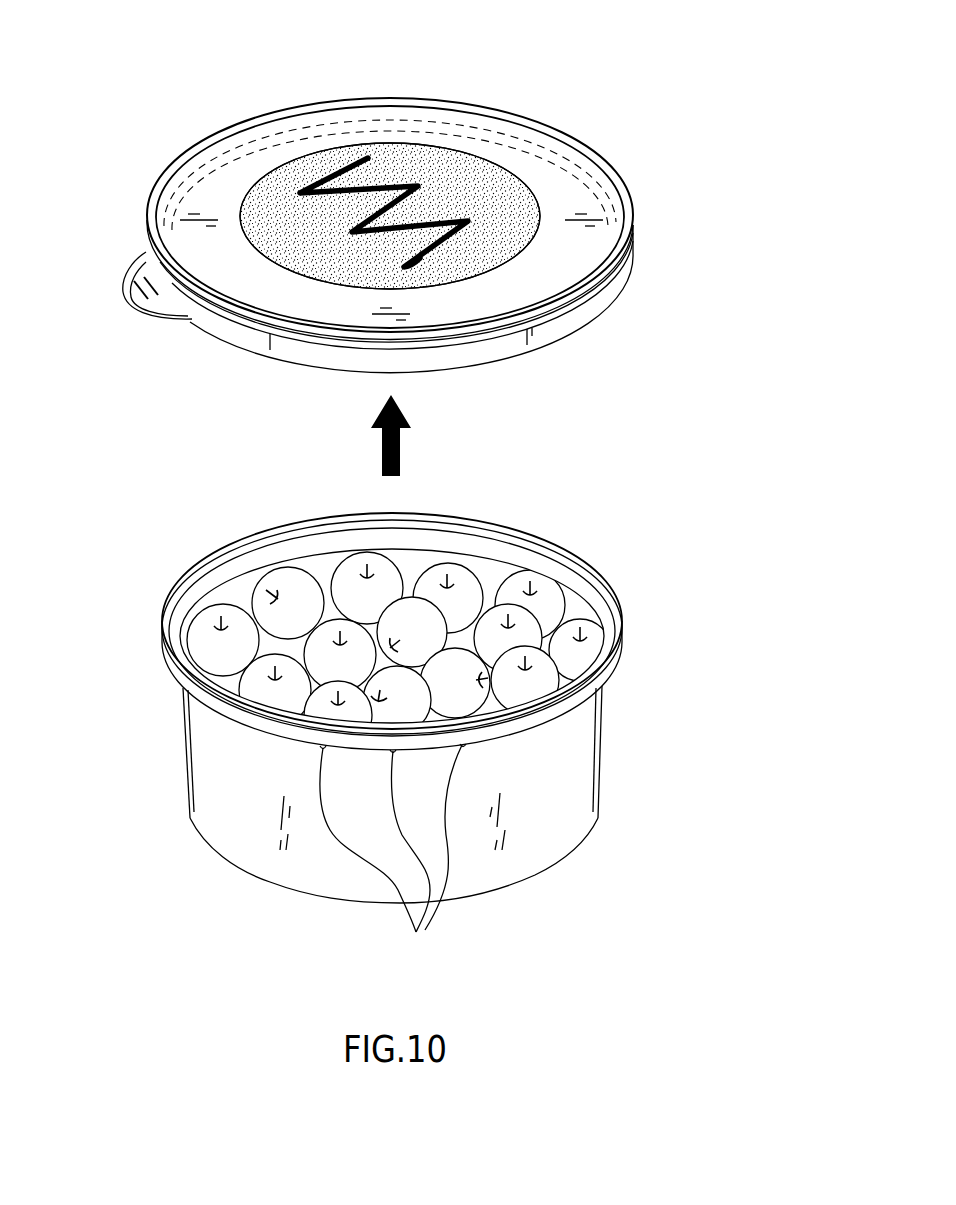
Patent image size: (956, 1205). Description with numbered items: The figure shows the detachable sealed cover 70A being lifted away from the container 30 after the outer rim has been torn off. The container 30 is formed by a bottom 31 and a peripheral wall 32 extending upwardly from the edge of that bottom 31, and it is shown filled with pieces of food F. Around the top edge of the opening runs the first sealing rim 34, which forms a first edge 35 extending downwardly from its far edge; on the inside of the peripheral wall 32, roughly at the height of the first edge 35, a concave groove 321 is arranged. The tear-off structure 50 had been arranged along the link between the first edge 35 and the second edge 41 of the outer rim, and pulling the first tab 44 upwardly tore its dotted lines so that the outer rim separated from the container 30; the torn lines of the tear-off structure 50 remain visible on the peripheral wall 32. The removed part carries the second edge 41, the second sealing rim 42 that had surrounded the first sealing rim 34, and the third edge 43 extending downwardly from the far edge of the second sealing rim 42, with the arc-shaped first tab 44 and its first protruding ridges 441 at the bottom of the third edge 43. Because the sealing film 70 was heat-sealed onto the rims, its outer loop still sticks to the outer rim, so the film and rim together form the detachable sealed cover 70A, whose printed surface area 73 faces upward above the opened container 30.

The detachable sealed cover 70A is at (612, 55).
The second sealing rim 42 is at (210, 142).
The second edge 41 is at (540, 137).
The sealing film 70 is at (560, 185).
The first tab 44 is at (135, 262).
The first protruding ridges 441 is at (145, 287).
The third edge 43 is at (623, 272).
The printed pattern layer 73 is at (485, 252).
The food F is at (286, 590).
The concave groove 321 is at (468, 550).
The first sealing rim 34 is at (597, 580).
The first edge 35 is at (585, 688).
The peripheral wall 32 is at (604, 765).
The container 30 is at (423, 705).
The bottom 31 is at (520, 885).
The tear-off structure 50 is at (391, 854).